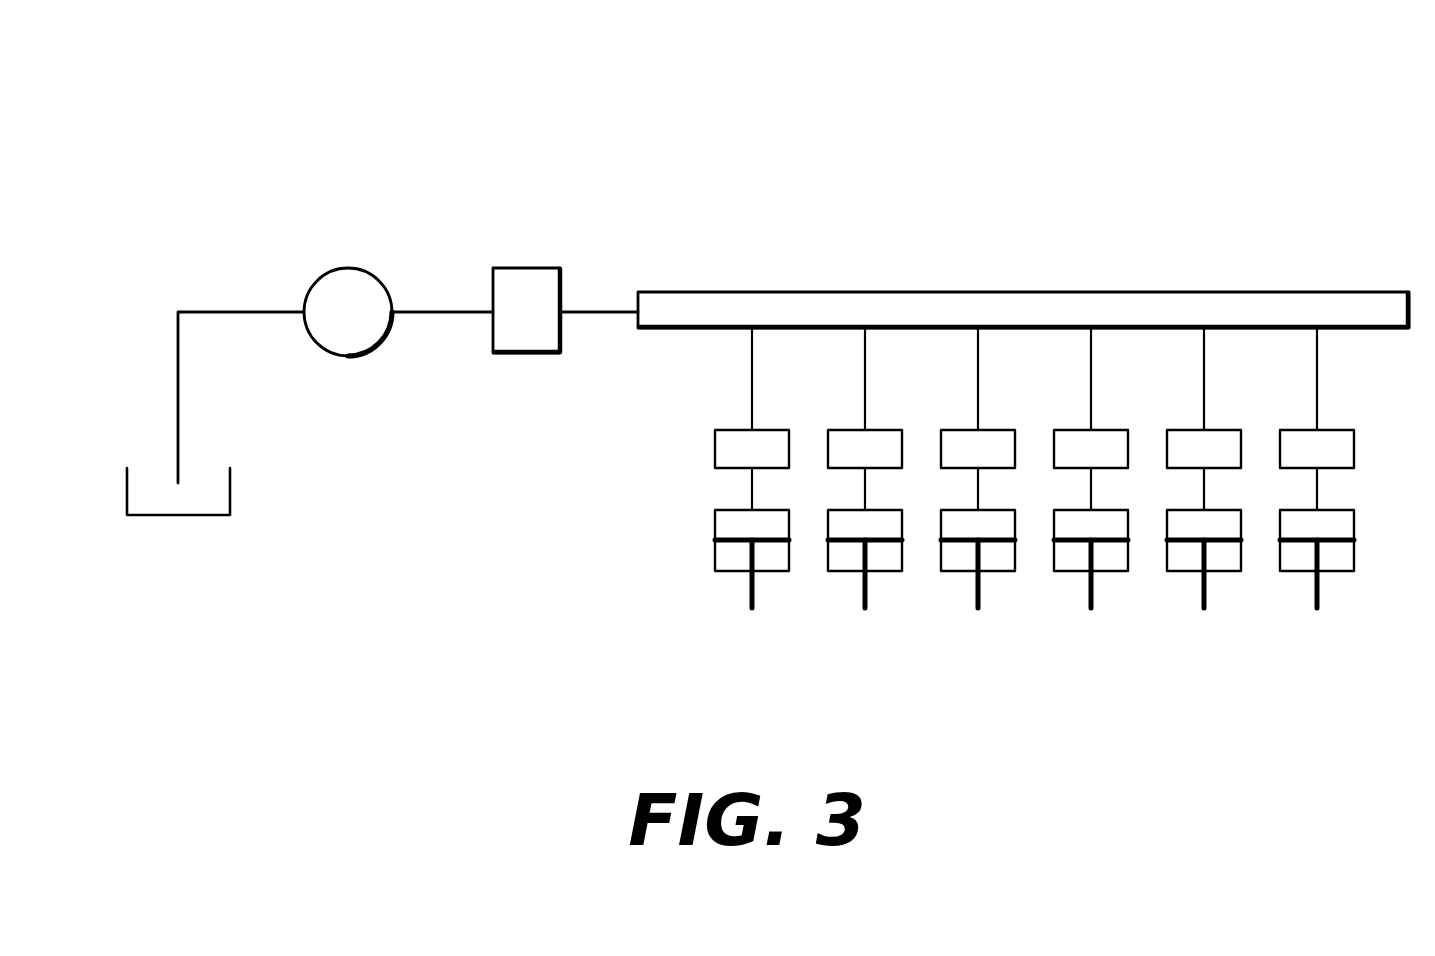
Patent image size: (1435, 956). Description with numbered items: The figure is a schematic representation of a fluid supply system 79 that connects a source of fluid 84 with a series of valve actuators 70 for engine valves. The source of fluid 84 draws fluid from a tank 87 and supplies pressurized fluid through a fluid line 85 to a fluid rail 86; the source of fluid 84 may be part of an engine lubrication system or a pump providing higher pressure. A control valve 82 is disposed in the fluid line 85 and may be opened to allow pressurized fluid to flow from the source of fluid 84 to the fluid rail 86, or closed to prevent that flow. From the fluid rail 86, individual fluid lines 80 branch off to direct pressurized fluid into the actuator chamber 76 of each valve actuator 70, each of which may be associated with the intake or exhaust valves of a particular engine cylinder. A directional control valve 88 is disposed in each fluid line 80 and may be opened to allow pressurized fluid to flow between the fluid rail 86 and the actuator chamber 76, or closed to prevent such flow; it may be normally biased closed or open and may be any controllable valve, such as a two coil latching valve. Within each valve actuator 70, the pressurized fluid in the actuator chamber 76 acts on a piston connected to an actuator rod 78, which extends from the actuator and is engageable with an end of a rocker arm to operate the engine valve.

The valve actuator 70 is at (672, 539).
The actuator chamber 76 is at (1288, 527).
The actuator rod 78 is at (1312, 593).
The fluid supply system 79 is at (749, 184).
The fluid line 80 is at (1315, 488).
The control valve 82 is at (525, 268).
The source of fluid 84 is at (345, 268).
The fluid line 85 is at (452, 303).
The fluid rail 86 is at (977, 292).
The tank 87 is at (177, 515).
The directional control valve 88 is at (1285, 432).